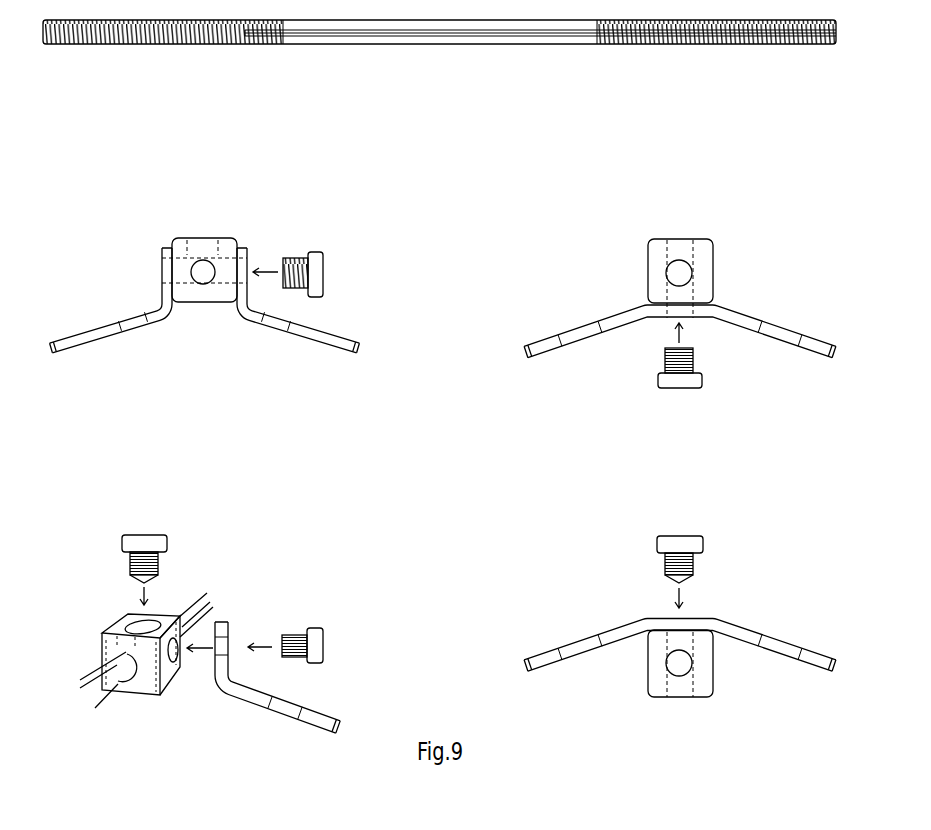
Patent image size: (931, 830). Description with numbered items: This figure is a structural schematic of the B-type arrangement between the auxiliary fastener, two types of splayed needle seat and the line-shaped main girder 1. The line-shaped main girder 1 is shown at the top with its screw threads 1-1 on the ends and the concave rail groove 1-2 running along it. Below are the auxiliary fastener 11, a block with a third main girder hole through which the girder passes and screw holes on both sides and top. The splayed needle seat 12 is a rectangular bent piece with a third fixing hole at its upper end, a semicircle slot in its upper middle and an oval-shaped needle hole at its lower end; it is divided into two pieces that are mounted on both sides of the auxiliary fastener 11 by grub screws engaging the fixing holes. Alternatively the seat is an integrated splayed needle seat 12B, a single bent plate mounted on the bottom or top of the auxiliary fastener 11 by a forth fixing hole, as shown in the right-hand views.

The line-shaped main girder 1 is at (378, 44).
The screw threads 1-1 is at (610, 44).
The concave rail groove 1-2 is at (826, 44).
The auxiliary fastener 11 is at (203, 302).
The splayed needle seat 12 is at (128, 308).
The integrated splayed needle seat 12B is at (630, 628).